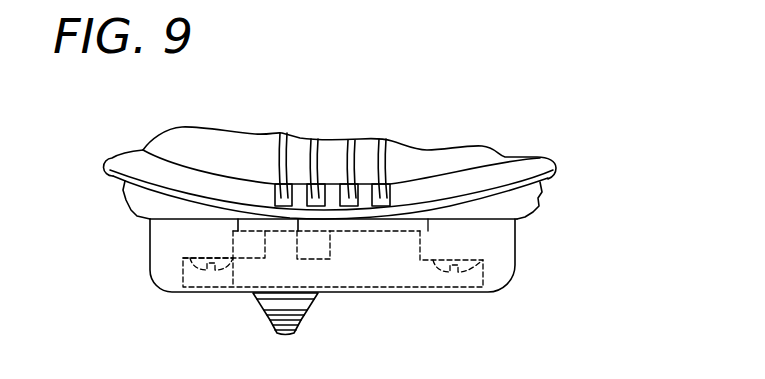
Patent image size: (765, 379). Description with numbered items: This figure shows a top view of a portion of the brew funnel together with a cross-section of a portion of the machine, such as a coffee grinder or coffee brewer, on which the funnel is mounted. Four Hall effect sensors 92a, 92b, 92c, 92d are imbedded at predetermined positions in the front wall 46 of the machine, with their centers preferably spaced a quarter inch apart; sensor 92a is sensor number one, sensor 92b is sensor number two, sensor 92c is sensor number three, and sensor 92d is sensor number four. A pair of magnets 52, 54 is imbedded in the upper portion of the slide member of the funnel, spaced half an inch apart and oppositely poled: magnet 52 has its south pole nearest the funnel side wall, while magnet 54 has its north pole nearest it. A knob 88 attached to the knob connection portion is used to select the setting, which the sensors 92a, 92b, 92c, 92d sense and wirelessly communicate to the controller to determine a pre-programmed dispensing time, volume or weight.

The front wall 46 is at (520, 175).
The sensor 92a is at (278, 191).
The sensor 92b is at (310, 191).
The sensor 92c is at (352, 192).
The sensor 92d is at (385, 193).
The magnet 52 is at (247, 262).
The magnet 54 is at (312, 262).
The knob 88 is at (296, 322).